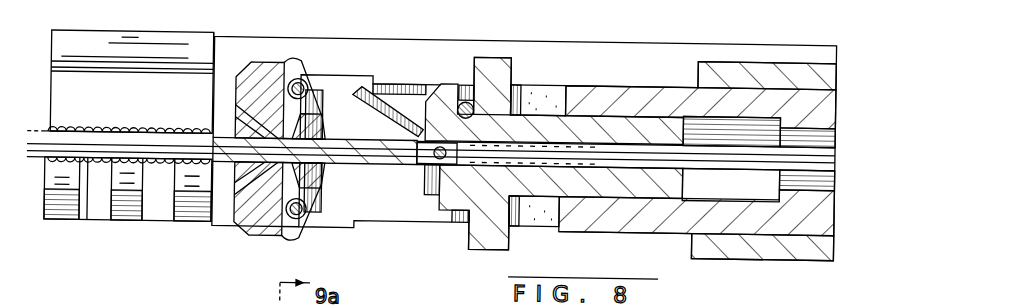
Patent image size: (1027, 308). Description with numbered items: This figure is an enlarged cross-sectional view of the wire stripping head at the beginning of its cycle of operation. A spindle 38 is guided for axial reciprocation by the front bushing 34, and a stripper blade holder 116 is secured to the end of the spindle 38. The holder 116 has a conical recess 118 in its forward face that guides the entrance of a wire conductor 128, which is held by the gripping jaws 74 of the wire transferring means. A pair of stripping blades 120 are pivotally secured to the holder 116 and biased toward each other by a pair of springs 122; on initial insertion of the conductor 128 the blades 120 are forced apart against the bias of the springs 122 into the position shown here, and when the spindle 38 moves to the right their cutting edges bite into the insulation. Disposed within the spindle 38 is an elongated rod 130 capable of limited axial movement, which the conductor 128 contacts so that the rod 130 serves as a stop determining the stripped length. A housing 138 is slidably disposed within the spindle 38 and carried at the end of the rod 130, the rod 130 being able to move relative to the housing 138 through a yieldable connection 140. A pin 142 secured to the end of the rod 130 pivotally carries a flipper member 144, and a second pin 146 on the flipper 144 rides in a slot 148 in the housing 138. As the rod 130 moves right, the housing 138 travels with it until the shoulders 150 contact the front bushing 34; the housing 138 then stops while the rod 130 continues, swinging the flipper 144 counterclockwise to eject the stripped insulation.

The front bushing 34 is at (763, 243).
The spindle 38 is at (612, 223).
The gripping jaws 74 is at (140, 114).
The stripper blade holder 116 is at (250, 226).
The conical recess 118 is at (236, 121).
The stripping blades 120 is at (330, 128).
The springs 122 is at (295, 238).
The wire conductor 128 is at (100, 148).
The elongated rod 130 is at (761, 158).
The housing 138 is at (475, 198).
The yieldable connection 140 is at (574, 146).
The pin 142 is at (432, 167).
The flipper member 144 is at (398, 104).
The second pin 146 is at (474, 108).
The slot 148 is at (463, 84).
The shoulders 150 is at (478, 100).